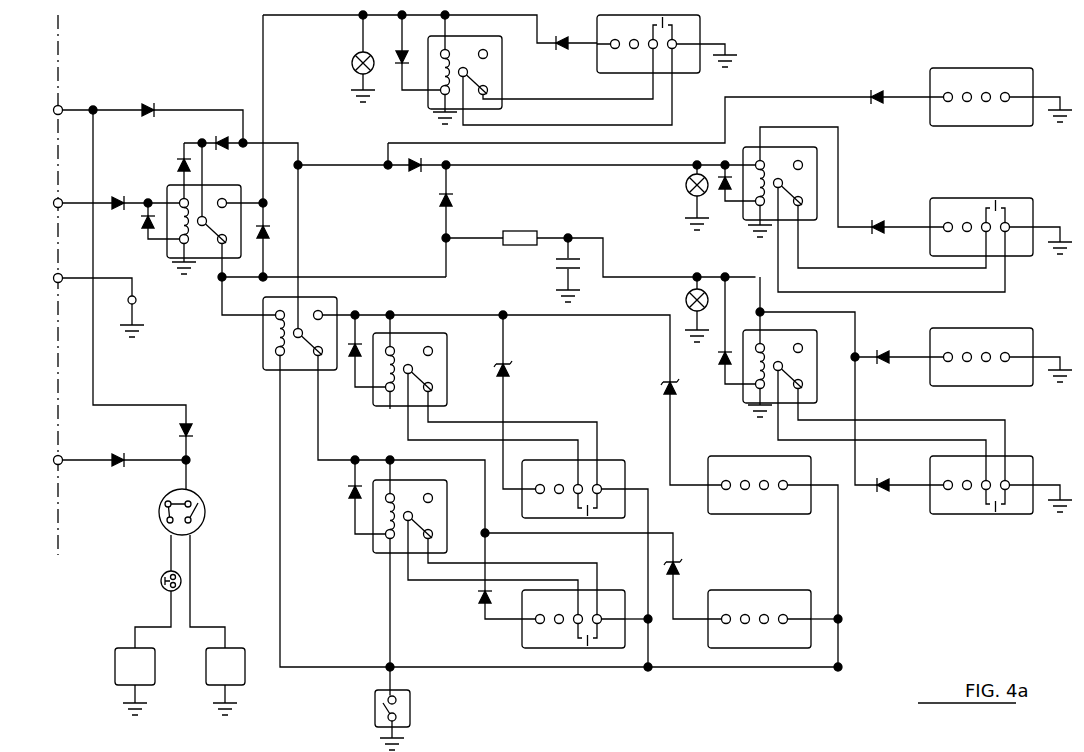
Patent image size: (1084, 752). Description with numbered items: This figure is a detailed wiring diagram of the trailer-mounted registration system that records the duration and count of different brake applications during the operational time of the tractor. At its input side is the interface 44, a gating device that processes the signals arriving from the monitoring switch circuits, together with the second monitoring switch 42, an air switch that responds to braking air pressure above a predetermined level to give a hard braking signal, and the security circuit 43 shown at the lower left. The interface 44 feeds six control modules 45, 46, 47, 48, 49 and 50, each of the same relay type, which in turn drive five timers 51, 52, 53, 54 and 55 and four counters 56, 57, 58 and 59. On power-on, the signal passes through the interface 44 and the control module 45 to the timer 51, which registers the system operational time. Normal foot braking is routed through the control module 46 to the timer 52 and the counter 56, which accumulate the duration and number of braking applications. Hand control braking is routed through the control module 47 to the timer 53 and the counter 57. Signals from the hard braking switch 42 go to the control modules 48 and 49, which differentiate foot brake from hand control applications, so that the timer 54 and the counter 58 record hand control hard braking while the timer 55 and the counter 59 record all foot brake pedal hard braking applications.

The second monitoring switch 42 is at (413, 708).
The security circuit 43 is at (205, 578).
The interface 44 is at (172, 185).
The control module 45 is at (503, 60).
The control module 46 is at (808, 222).
The control module 47 is at (820, 355).
The control module 48 is at (448, 370).
The control module 49 is at (373, 550).
The control module 50 is at (263, 345).
The timer 51 is at (700, 33).
The timer 52 is at (1035, 218).
The timer 53 is at (1037, 470).
The timer 54 is at (609, 456).
The timer 55 is at (612, 585).
The counter 56 is at (1035, 90).
The counter 57 is at (1035, 345).
The counter 58 is at (735, 456).
The counter 59 is at (745, 590).